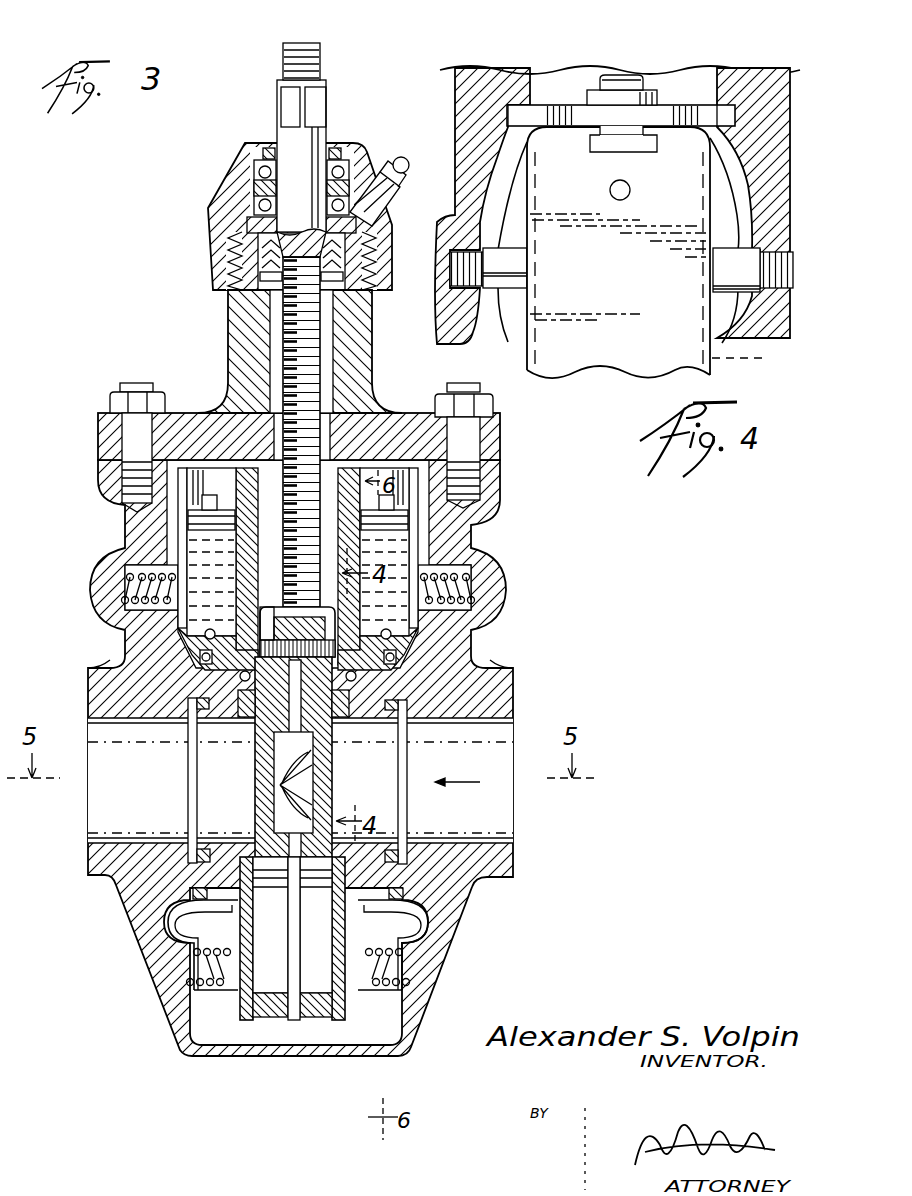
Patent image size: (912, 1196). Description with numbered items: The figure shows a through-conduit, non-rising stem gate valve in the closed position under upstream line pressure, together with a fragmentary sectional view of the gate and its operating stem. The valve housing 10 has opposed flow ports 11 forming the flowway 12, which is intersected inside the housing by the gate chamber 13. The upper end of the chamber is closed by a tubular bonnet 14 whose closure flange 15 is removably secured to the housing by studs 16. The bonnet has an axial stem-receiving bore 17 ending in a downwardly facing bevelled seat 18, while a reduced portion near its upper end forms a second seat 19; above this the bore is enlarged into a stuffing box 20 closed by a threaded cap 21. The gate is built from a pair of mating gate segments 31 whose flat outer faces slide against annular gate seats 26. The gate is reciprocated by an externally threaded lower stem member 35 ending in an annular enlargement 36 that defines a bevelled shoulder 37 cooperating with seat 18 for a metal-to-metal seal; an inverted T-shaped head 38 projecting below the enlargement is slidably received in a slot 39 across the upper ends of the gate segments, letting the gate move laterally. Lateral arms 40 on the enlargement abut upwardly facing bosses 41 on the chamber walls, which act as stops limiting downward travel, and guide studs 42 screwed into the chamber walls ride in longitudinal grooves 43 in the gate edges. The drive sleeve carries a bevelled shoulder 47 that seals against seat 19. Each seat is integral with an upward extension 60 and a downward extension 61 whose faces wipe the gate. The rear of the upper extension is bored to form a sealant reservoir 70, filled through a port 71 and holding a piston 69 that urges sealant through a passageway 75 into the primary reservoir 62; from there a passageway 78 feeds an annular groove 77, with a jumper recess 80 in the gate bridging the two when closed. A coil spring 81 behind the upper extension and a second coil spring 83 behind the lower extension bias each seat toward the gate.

In FIG. 3, the valve housing 10 is at (505, 492).
In FIG. 4, the valve housing 10 is at (770, 207).
In FIG. 3, the flow port 11 is at (95, 668).
In FIG. 3, the flowway 12 is at (500, 850).
In FIG. 3, the gate chamber 13 is at (423, 506).
In FIG. 4, the gate chamber 13 is at (746, 190).
In FIG. 3, the bonnet 14 is at (243, 345).
In FIG. 3, the closure flange 15 is at (495, 437).
In FIG. 3, the stud 16 is at (135, 382).
In FIG. 3, the stem-receiving bore 17 is at (267, 323).
In FIG. 3, the seat 18 is at (360, 458).
In FIG. 3, the seat 19 is at (265, 268).
In FIG. 3, the stuffing box 20 is at (235, 250).
In FIG. 3, the cap 21 is at (218, 216).
In FIG. 3, the gate seat 26 is at (206, 855).
In FIG. 3, the gate segment 31 is at (257, 821).
In FIG. 4, the gate segment 31 is at (690, 364).
In FIG. 4, the lower stem member 35 is at (622, 74).
In FIG. 3, the annular enlargement 36 is at (263, 608).
In FIG. 4, the annular enlargement 36 is at (602, 106).
In FIG. 4, the annular shoulder 37 is at (662, 106).
In FIG. 3, the T-shaped head 38 is at (258, 622).
In FIG. 4, the T-shaped head 38 is at (627, 150).
In FIG. 4, the slot 39 is at (645, 138).
In FIG. 4, the lateral arm 40 is at (548, 105).
In FIG. 4, the boss 41 is at (498, 120).
In FIG. 4, the guide stud 42 is at (525, 272).
In FIG. 4, the longitudinal groove 43 is at (753, 358).
In FIG. 3, the bevelled shoulder 47 is at (280, 283).
In FIG. 3, the upward extension 60 is at (418, 620).
In FIG. 3, the downward extension 61 is at (343, 927).
In FIG. 3, the primary reservoir 62 is at (208, 905).
In FIG. 3, the piston 69 is at (402, 520).
In FIG. 3, the sealant reservoir 70 is at (402, 553).
In FIG. 3, the port 71 is at (397, 650).
In FIG. 3, the passageway 75 is at (213, 660).
In FIG. 3, the annular groove 77 is at (237, 692).
In FIG. 3, the passageway 78 is at (250, 695).
In FIG. 3, the jumper recess 80 is at (250, 683).
In FIG. 4, the jumper recess 80 is at (631, 192).
In FIG. 3, the coil spring 81 is at (125, 572).
In FIG. 3, the coil spring 83 is at (200, 994).